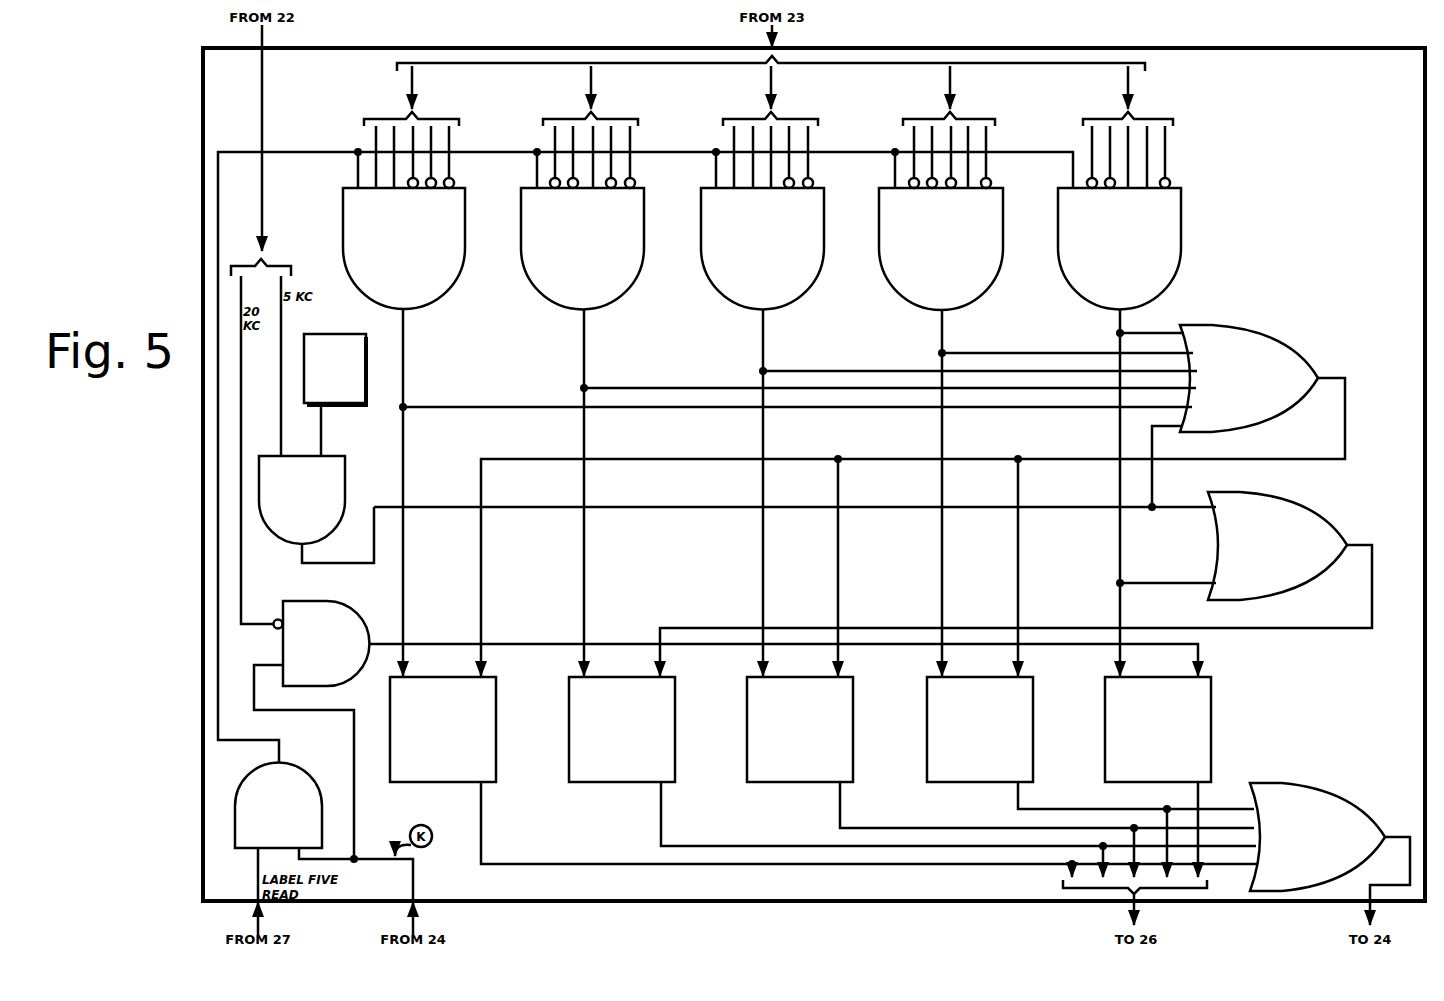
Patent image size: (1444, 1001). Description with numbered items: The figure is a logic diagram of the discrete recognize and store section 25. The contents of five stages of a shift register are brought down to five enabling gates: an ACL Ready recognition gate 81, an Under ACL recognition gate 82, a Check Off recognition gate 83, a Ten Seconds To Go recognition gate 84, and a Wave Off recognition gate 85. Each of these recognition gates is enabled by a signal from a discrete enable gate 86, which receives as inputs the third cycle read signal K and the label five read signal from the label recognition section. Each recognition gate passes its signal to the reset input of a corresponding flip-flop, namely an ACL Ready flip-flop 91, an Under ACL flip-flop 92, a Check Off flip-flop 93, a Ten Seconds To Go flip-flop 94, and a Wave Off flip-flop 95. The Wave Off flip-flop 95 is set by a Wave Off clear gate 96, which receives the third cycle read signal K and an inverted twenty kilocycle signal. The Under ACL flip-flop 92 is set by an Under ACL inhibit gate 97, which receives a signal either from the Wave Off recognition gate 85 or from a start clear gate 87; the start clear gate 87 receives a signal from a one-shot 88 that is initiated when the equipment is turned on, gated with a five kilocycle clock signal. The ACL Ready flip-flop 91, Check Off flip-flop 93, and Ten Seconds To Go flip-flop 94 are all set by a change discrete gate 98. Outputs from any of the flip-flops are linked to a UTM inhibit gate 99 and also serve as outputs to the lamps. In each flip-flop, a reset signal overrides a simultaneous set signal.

The discrete recognize and store section 25 is at (196, 61).
The ACL Ready recognition gate 81 is at (447, 290).
The Under ACL recognition gate 82 is at (625, 290).
The Check Off recognition gate 83 is at (805, 290).
The 10 Seconds To Go recognition gate 84 is at (984, 290).
The Wave Off recognition gate 85 is at (1162, 290).
The discrete enable gate 86 is at (300, 765).
The start clear gate 87 is at (345, 466).
The one-shot 88 is at (320, 334).
The ACL Ready flip-flop 91 is at (452, 678).
The Under ACL flip-flop 92 is at (631, 678).
The Check Off flip-flop 93 is at (810, 678).
The 10 Seconds To Go flip-flop 94 is at (990, 678).
The Wave Off flip-flop 95 is at (1168, 678).
The Wave Off clear gate 96 is at (340, 601).
The Under ACL inhibit gate 97 is at (1330, 520).
The change discrete gate 98 is at (1277, 333).
The UTM inhibit gate 99 is at (1340, 790).